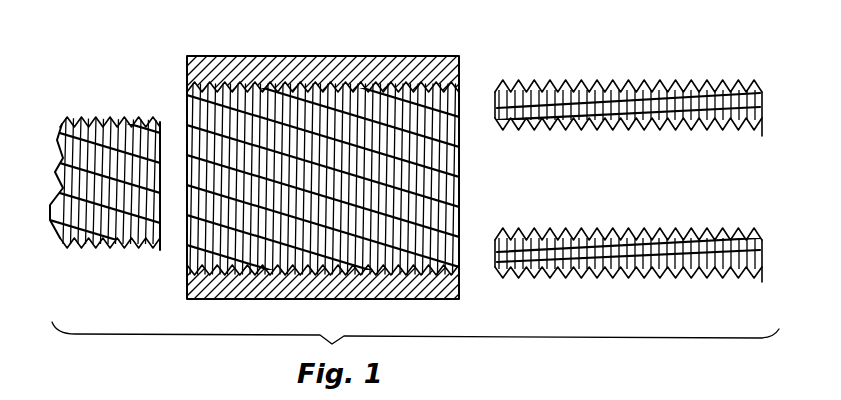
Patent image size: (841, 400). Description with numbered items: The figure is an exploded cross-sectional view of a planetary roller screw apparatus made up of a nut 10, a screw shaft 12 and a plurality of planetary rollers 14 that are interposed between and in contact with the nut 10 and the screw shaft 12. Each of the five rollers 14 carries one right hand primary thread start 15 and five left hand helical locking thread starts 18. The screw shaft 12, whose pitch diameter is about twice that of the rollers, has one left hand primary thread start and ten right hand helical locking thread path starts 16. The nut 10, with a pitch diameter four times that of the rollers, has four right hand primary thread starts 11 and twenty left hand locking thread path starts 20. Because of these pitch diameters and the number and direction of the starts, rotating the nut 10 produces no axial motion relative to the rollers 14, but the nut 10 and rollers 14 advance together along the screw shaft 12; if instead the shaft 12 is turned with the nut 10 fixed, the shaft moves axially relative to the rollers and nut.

The nut 10 is at (378, 66).
The right hand primary thread starts 11 is at (406, 118).
The screw shaft 12 is at (72, 122).
The planetary rollers 14 is at (632, 127).
The right hand primary thread start 15 is at (507, 122).
The right hand helical locking thread path starts 16 is at (116, 276).
The left hand helical locking thread starts 18 is at (548, 90).
The left hand locking thread path starts 20 is at (255, 105).